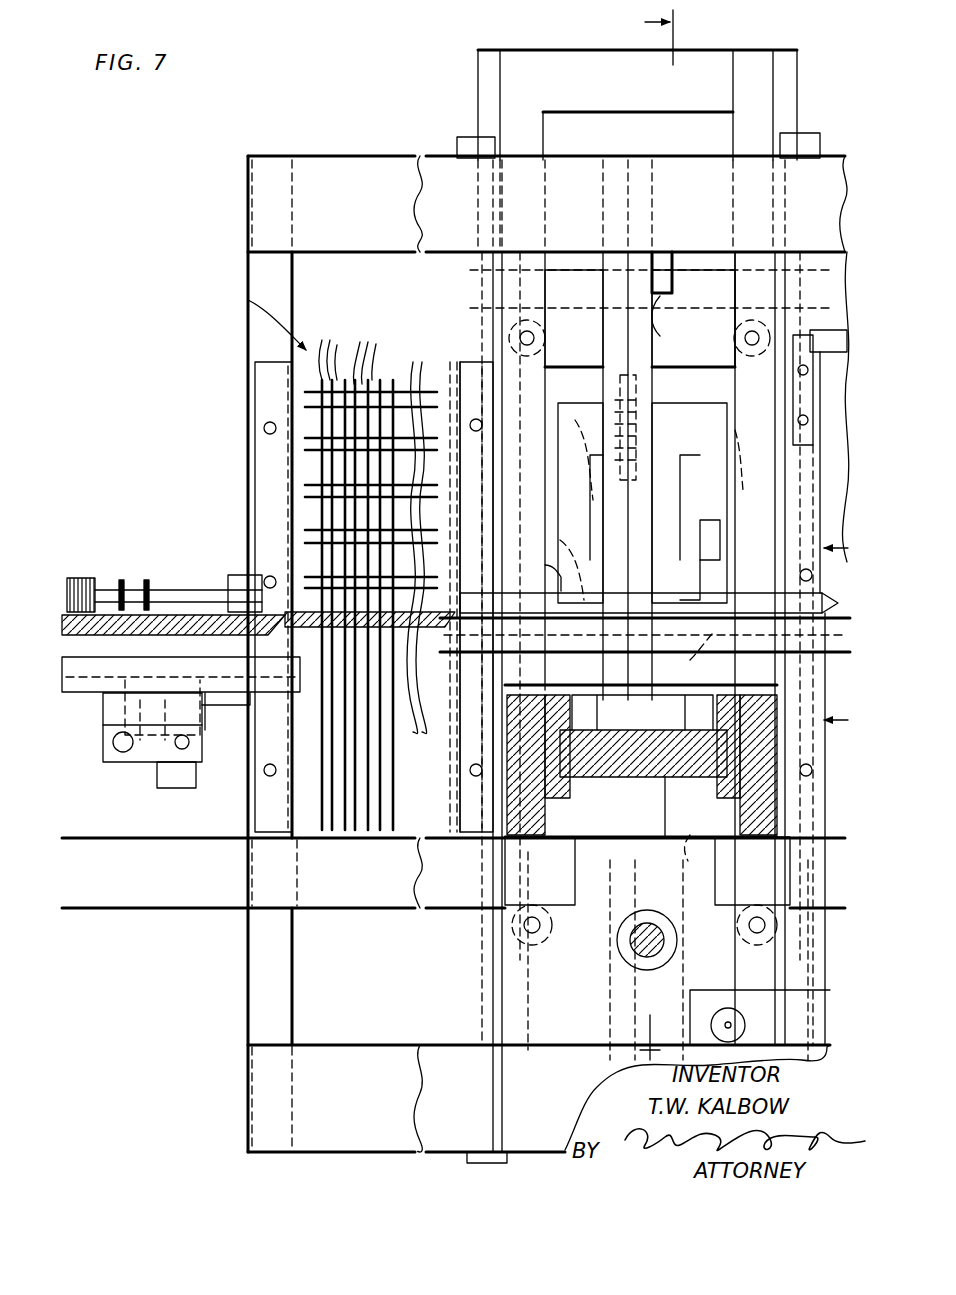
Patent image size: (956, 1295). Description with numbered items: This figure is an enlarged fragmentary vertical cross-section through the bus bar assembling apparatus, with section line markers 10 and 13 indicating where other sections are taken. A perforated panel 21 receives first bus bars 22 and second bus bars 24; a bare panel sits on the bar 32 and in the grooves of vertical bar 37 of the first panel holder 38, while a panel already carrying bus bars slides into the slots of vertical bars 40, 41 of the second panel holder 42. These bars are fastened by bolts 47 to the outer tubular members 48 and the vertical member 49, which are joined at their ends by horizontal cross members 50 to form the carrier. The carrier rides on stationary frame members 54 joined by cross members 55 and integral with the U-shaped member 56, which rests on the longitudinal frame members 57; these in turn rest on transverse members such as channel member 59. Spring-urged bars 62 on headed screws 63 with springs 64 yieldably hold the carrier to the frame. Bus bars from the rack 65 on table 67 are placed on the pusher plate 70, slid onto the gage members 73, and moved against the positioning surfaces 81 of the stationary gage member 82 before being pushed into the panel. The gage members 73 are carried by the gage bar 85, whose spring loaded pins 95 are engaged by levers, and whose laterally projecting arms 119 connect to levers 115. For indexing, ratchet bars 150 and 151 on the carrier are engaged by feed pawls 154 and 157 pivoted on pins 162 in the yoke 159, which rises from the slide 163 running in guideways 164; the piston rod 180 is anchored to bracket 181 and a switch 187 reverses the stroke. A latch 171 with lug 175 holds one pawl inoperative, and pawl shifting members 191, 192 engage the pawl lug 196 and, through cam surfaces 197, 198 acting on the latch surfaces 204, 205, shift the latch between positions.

The section line 10 is at (644, 535).
The section line 13 is at (837, 623).
The perforated panel 21 is at (304, 474).
The first bus bars 22 is at (329, 362).
The second bus bars 24 is at (83, 578).
The bar 32 is at (766, 308).
The vertical bar 37 is at (806, 462).
The first panel holder 38 is at (832, 324).
The vertical bar 40 is at (258, 457).
The vertical bar 41 is at (476, 500).
The second panel holder 42 is at (248, 300).
The bolts 47 is at (262, 426).
The vertical outer tubular members 48 is at (267, 238).
The vertical member 49 is at (466, 324).
The horizontal cross members 50 is at (346, 184).
The stationary frame members 54 is at (510, 74).
The cross members 55 is at (565, 74).
The U-shaped member 56 is at (505, 641).
The frame members 57 is at (530, 826).
The channel member 59 is at (193, 896).
The bars 62 is at (486, 302).
The headed screws 63 is at (534, 334).
The springs 64 is at (548, 932).
The rack 65 is at (119, 590).
The table 67 is at (170, 612).
The pusher plate 70 is at (292, 614).
The gage members 73 is at (356, 638).
The vertical positioning surfaces 81 is at (443, 600).
The stationary gage member 82 is at (556, 571).
The gage bar 85 is at (272, 694).
The spring loaded pins 95 is at (122, 748).
The levers 115 is at (230, 705).
The laterally projecting arms 119 is at (158, 754).
The ratchet bar 150 is at (650, 340).
The ratchet bar 151 is at (610, 346).
The feed pawl 154 is at (586, 712).
The feed pawl 157 is at (696, 500).
The yoke 159 is at (666, 412).
The pins 162 is at (568, 426).
The slide 163 is at (590, 780).
The guideways 164 is at (538, 702).
The latch 171 is at (802, 574).
The lug 175 is at (560, 540).
The piston rod 180 is at (634, 956).
The stationary bracket 181 is at (530, 1002).
The switch 187 is at (712, 1022).
The pawl shifting member 191 is at (710, 836).
The pawl shifting member 192 is at (666, 254).
The lug 196 is at (696, 542).
The inclined cam surface 197 is at (666, 836).
The inclined cam surface 198 is at (662, 308).
The cam surface 204 is at (727, 641).
The cam surface 205 is at (696, 574).